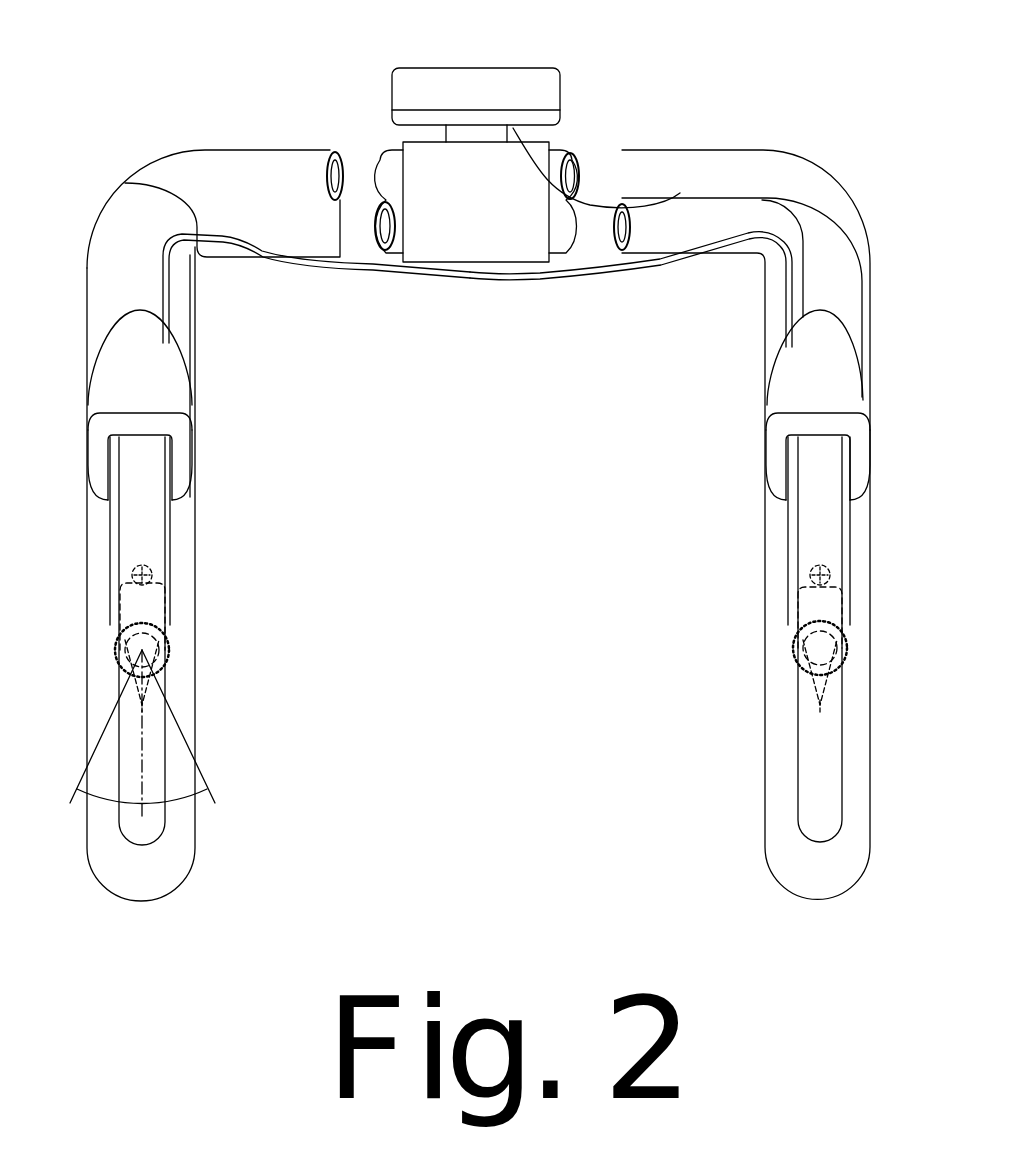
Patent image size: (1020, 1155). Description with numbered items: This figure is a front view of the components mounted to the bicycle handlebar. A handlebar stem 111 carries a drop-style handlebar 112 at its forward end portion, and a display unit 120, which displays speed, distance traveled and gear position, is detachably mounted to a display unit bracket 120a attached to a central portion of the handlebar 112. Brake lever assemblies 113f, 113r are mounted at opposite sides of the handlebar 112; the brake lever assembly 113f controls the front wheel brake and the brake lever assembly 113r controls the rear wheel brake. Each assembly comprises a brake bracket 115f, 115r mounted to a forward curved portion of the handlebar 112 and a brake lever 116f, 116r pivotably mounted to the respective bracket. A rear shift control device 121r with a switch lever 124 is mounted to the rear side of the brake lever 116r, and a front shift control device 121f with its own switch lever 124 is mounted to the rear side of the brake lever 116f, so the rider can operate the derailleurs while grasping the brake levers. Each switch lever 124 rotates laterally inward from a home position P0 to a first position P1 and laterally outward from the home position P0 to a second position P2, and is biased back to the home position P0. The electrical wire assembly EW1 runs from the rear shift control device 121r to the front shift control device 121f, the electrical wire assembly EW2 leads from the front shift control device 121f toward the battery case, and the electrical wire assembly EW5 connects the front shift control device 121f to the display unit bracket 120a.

The drop-style handlebar 112 is at (765, 160).
The display unit 120 is at (488, 78).
The display unit bracket 120a is at (500, 118).
The handlebar stem 111 is at (508, 250).
The electrical wire assembly EW1 is at (440, 278).
The electrical wire assembly EW2 is at (525, 282).
The electrical wire assembly EW5 is at (680, 193).
The brake lever assembly 113r is at (205, 360).
The brake lever assembly 113f is at (742, 370).
The brake bracket 115r is at (162, 363).
The brake bracket 115f is at (792, 375).
The brake lever 116r is at (150, 538).
The brake lever 116f is at (810, 535).
The rear shift control device 121r is at (180, 630).
The front shift control device 121f is at (785, 632).
The switch lever 124 is at (160, 683).
The home position P0 is at (149, 767).
The first position P1 is at (166, 747).
The second position P2 is at (90, 747).